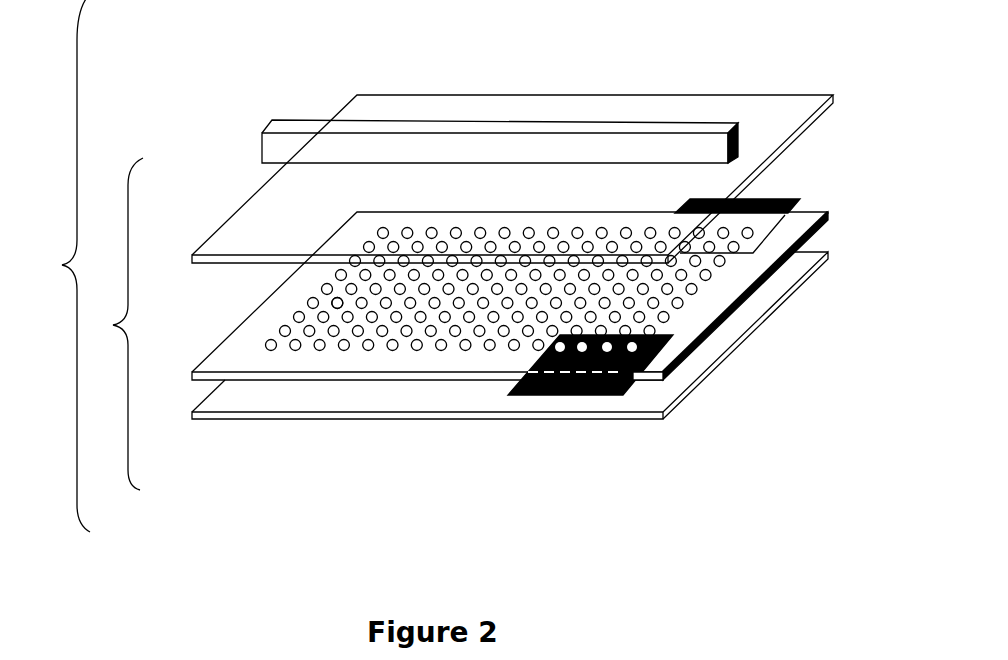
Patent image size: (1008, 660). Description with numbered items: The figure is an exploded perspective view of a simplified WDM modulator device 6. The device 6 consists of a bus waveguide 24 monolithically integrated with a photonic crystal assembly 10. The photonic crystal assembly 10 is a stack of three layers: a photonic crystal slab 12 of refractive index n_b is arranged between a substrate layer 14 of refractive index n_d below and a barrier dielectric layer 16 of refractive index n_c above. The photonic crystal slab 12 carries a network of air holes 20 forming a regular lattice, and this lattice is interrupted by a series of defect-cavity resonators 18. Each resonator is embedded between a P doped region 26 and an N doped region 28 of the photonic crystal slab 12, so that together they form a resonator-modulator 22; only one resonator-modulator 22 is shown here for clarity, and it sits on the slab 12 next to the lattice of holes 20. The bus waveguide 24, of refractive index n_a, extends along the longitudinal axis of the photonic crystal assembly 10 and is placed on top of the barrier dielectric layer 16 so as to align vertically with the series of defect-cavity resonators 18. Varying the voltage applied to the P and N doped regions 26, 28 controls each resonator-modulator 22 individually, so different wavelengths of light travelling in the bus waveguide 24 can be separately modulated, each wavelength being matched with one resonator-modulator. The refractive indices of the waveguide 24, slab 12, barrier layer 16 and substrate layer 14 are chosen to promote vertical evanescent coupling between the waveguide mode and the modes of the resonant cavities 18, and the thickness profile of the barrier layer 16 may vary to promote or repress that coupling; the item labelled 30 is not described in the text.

The WDM modulator device 6 is at (59, 266).
The photonic crystal assembly 10 is at (111, 324).
The photonic crystal slab 12 is at (242, 335).
The substrate layer 14 is at (245, 407).
The barrier dielectric layer 16 is at (243, 223).
The defect-cavity resonators 18 is at (472, 290).
The air holes 20 is at (337, 309).
The resonator-modulator 22 is at (667, 290).
The bus waveguide 24 is at (308, 118).
The P doped region 26 is at (657, 355).
The N doped region 28 is at (757, 238).
The chip contacts 30 is at (603, 388).